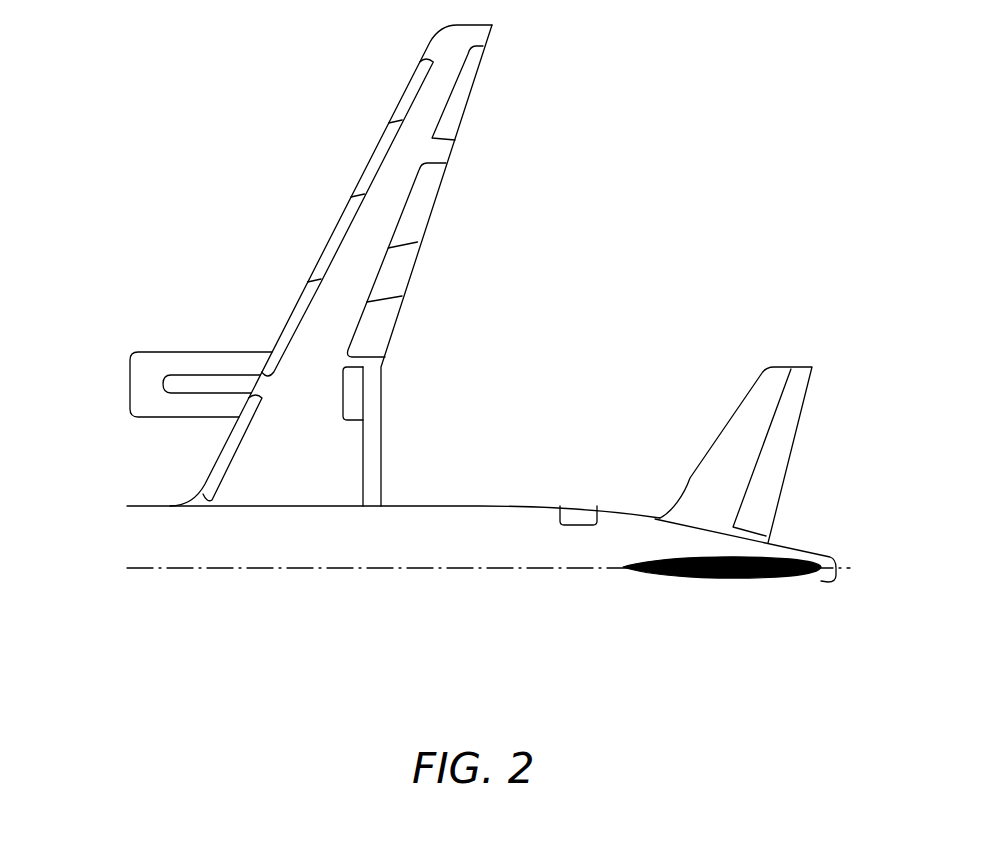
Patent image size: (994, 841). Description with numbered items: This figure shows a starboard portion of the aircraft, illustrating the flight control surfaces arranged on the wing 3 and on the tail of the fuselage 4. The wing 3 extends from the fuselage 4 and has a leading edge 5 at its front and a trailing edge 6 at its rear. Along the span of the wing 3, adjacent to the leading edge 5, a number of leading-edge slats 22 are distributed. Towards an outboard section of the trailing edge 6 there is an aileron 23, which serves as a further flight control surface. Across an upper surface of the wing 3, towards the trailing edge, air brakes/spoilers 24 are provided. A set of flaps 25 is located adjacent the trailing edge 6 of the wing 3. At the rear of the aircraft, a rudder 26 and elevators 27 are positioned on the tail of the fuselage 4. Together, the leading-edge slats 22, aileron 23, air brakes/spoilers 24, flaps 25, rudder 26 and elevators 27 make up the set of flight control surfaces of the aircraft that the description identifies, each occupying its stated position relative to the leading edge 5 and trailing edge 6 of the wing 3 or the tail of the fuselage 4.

The wing 3 is at (146, 136).
The fuselage 4 is at (527, 523).
The leading edge 5 is at (330, 230).
The trailing edge 6 is at (466, 107).
The leading-edge slats 22 is at (374, 166).
The aileron 23 is at (447, 128).
The air brakes/spoilers 24 is at (386, 273).
The flaps 25 is at (374, 433).
The rudder 26 is at (709, 569).
The elevators 27 is at (781, 450).